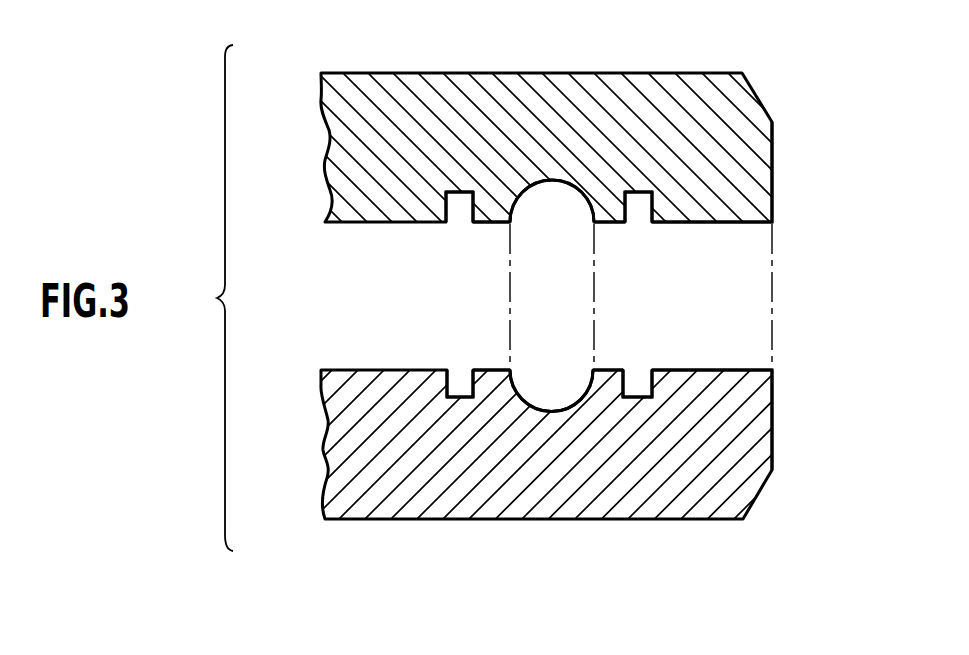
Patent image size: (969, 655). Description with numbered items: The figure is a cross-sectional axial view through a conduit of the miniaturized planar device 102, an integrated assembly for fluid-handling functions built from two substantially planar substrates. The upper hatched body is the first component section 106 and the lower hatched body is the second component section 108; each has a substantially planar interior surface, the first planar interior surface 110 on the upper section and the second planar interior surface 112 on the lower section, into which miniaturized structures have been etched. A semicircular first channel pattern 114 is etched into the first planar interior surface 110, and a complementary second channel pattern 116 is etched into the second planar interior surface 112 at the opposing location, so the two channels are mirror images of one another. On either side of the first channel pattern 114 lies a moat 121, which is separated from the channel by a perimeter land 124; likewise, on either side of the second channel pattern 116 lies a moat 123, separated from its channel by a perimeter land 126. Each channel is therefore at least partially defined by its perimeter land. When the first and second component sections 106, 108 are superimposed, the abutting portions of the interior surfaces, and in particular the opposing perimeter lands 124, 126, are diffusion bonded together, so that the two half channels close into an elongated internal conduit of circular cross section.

The miniaturized planar device 102 is at (200, 298).
The first component section 106 is at (660, 88).
The second component section 108 is at (532, 463).
The first planar interior surface 110 is at (744, 224).
The second planar interior surface 112 is at (726, 370).
The first channel pattern 114 is at (561, 186).
The second channel pattern 116 is at (549, 406).
The moat 121 is at (452, 227).
The moat 123 is at (457, 386).
The perimeter land 124 is at (496, 226).
The perimeter land 126 is at (488, 367).